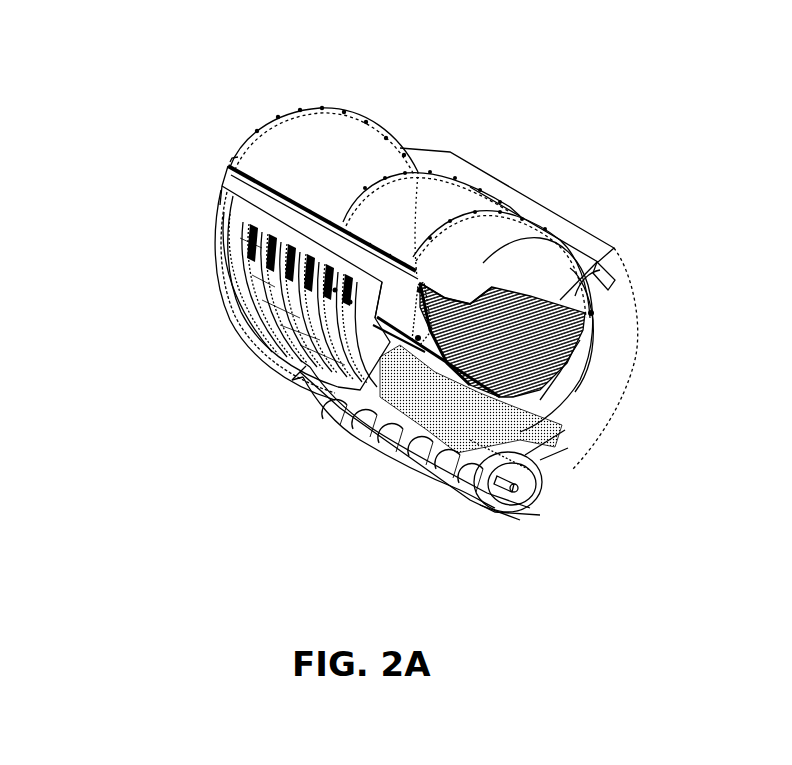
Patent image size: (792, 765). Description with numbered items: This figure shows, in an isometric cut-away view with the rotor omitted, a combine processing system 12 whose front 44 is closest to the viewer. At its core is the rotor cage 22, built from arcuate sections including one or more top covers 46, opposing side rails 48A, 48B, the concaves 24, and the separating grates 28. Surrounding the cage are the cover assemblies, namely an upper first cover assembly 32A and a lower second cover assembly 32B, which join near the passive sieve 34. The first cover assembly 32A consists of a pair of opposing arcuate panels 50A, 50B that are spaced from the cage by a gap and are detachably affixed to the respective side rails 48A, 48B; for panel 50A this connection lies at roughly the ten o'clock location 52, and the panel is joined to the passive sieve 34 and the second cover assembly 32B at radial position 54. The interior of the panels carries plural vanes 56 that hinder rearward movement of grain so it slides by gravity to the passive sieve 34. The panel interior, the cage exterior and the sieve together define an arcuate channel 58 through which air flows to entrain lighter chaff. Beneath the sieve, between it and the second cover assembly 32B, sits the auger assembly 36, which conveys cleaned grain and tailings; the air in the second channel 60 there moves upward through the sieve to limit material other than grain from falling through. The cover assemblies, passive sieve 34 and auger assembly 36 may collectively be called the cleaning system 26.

The combine processing system 12 is at (94, 126).
The rotor cage 22 is at (276, 118).
The concaves 24 is at (560, 368).
The cleaning system 26 is at (534, 554).
The separating grates 28 is at (435, 345).
The first cover assembly 32A is at (222, 208).
The second cover assembly 32B is at (300, 385).
The passive sieve 34 is at (540, 432).
The auger assembly 36 is at (530, 487).
The front 44 is at (670, 304).
The top covers 46 is at (350, 146).
The side rail 48A is at (318, 378).
The side rail 48B is at (582, 292).
The arcuate panel 50A is at (295, 241).
The arcuate panel 50B is at (505, 185).
The connection location 52 is at (420, 288).
The radial position 54 is at (425, 386).
The vanes 56 is at (240, 284).
The arcuate channel 58 is at (492, 445).
The second channel 60 is at (542, 458).